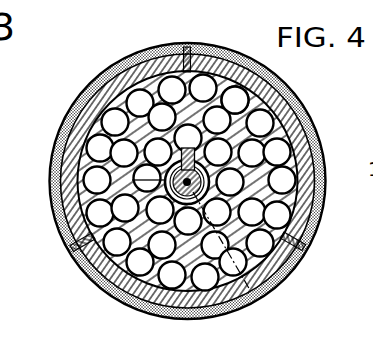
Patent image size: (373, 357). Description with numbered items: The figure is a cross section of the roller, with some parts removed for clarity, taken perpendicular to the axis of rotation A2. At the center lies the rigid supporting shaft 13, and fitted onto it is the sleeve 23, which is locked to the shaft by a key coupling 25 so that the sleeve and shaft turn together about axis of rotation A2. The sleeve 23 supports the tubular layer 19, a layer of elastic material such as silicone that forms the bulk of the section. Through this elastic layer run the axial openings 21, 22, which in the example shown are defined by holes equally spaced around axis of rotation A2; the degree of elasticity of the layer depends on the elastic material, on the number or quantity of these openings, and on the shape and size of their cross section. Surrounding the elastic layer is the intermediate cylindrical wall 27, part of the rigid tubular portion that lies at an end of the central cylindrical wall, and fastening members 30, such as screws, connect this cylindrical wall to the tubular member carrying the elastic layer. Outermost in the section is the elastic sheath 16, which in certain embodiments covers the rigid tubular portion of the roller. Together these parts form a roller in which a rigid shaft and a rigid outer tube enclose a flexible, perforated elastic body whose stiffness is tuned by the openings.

The supporting shaft 13 is at (152, 216).
The elastic sheath 16 is at (54, 207).
The tubular layer 19 is at (251, 102).
The axial openings 21 is at (110, 118).
The axial openings 22 is at (90, 97).
The sleeve 23 is at (148, 150).
The key coupling 25 is at (192, 148).
The intermediate cylindrical wall 27 is at (137, 52).
The fastening member 30 is at (187, 47).
The axis of rotation A2 is at (258, 288).